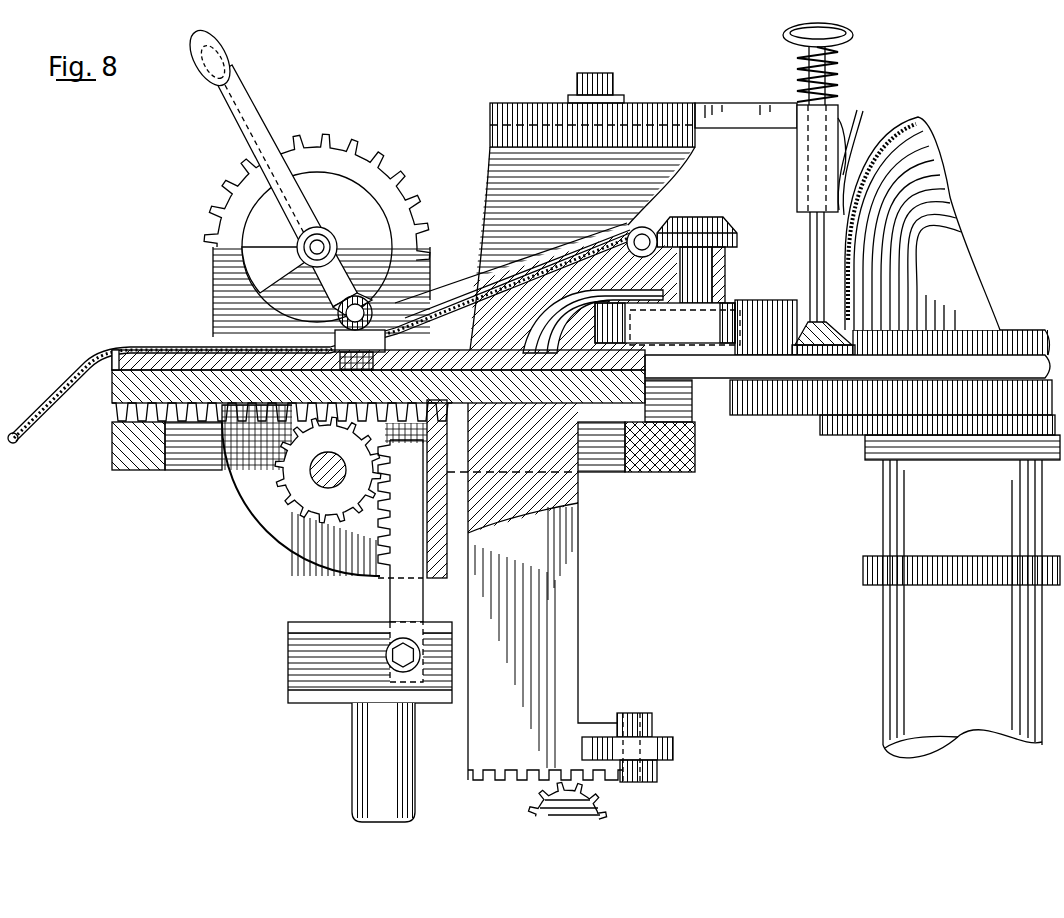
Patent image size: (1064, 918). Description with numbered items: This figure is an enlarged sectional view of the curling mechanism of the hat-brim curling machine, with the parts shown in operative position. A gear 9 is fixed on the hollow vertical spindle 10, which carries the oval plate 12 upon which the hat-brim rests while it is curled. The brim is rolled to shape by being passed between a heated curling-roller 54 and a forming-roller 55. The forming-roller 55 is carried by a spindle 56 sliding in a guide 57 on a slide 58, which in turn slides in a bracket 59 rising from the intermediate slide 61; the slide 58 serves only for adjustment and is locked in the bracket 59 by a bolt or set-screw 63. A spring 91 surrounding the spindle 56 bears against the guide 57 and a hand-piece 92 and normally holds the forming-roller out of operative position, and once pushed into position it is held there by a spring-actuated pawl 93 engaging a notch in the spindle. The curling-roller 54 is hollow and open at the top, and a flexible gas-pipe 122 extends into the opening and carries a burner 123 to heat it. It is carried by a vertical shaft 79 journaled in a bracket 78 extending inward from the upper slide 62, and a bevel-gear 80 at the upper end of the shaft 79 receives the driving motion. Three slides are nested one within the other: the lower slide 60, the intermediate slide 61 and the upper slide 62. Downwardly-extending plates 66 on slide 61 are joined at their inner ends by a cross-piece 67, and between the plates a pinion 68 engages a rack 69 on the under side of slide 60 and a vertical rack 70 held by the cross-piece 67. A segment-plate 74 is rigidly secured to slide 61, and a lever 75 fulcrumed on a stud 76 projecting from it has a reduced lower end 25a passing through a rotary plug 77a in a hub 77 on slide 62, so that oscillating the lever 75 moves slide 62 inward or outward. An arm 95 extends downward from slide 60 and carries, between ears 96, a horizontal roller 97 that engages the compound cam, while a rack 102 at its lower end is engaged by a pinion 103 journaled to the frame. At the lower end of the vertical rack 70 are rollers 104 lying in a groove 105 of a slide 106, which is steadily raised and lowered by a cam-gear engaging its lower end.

The gear 9 is at (782, 410).
The hollow vertical spindle 10 is at (888, 625).
The oval plate 12 is at (847, 354).
The reduced lower end of lever 25a is at (352, 295).
The curling-roller 54 is at (759, 312).
The forming-roller 55 is at (845, 333).
The spindle 56 is at (809, 272).
The guide 57 is at (800, 178).
The slide 58 is at (762, 118).
The bracket 59 is at (582, 287).
The lower slide 60 is at (113, 418).
The intermediate slide 61 is at (112, 385).
The upper slide 62 is at (173, 350).
The bolt or set-screw 63 is at (613, 90).
The downwardly-extending plates 66 is at (324, 490).
The cross-piece 67 is at (502, 590).
The pinion 68 is at (328, 470).
The rack 69 is at (205, 430).
The vertical rack 70 is at (400, 540).
The segment-plate 74 is at (402, 186).
The lever 75 is at (300, 208).
The stud 76 is at (326, 245).
The hub 77 is at (472, 300).
The rotary plug 77a is at (338, 313).
The bracket 78 is at (645, 232).
The vertical shaft 79 is at (722, 276).
The bevel-gear 80 is at (730, 228).
The spring 91 is at (838, 66).
The hand-piece 92 is at (785, 40).
The spring-actuated pawl 93 is at (860, 134).
The arm 95 is at (542, 585).
The ears 96 is at (598, 730).
The roller 97 is at (672, 748).
The rack 102 is at (522, 760).
The pinion 103 is at (525, 810).
The rollers 104 is at (401, 673).
The groove 105 is at (370, 662).
The slide 106 is at (383, 762).
The flexible gas-pipe 122 is at (113, 347).
The burner 123 is at (667, 324).